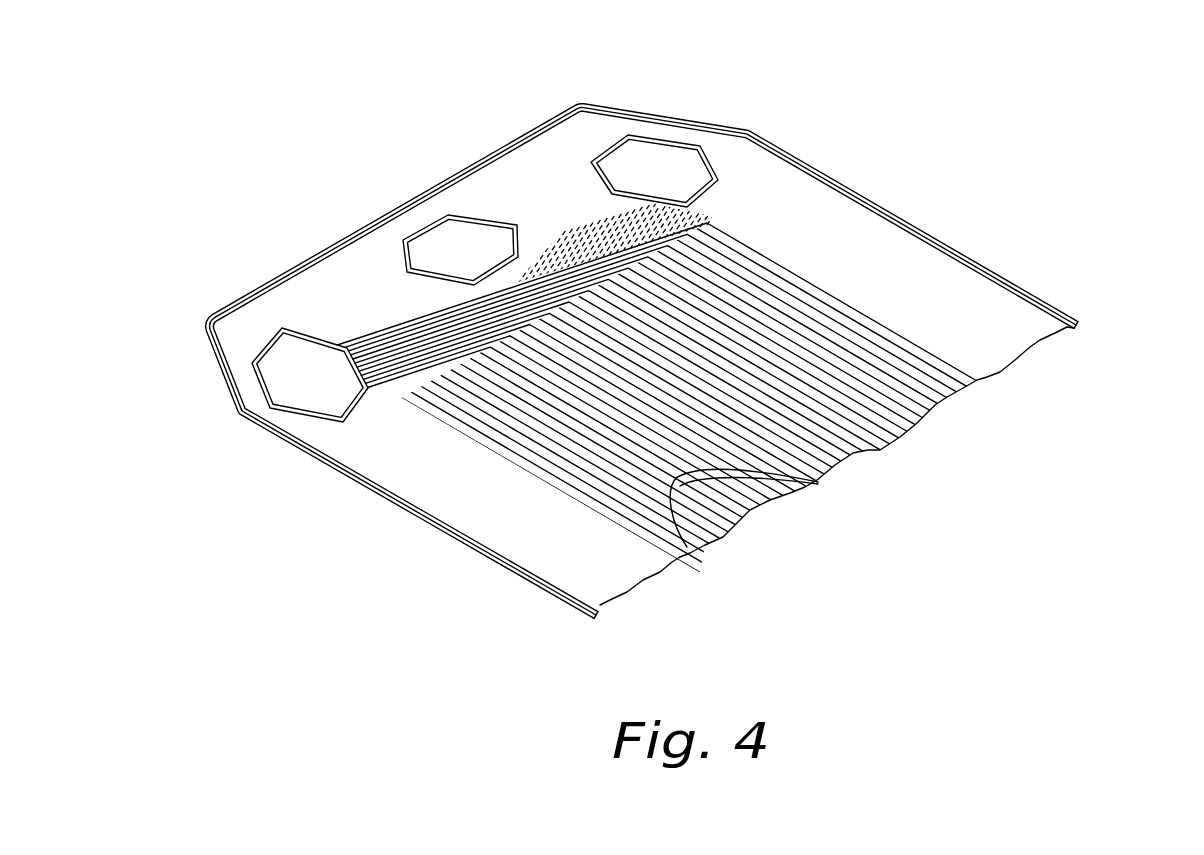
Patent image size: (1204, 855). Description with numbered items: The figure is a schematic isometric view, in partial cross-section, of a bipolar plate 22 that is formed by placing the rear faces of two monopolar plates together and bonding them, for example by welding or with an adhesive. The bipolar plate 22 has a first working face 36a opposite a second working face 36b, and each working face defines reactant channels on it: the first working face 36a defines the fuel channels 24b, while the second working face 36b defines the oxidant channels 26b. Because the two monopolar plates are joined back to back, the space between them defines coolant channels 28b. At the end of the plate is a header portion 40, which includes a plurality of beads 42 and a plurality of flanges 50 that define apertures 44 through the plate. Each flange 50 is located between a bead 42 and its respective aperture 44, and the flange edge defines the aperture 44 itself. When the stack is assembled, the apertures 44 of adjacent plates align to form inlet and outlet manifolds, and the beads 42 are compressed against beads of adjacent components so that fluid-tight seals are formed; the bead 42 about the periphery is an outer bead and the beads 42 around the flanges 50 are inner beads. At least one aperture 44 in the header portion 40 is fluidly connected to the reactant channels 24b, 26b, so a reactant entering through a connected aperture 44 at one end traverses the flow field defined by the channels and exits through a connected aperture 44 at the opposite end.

The bipolar plate 22 is at (1118, 153).
The fuel channels 24b is at (782, 307).
The oxidant channels 26b is at (677, 557).
The coolant channels 28b is at (602, 615).
The first working face 36a is at (392, 473).
The second working face 36b is at (462, 552).
The header portion 40 is at (832, 145).
The bead 42 is at (560, 158).
The aperture 44 is at (625, 157).
The flange 50 is at (580, 150).